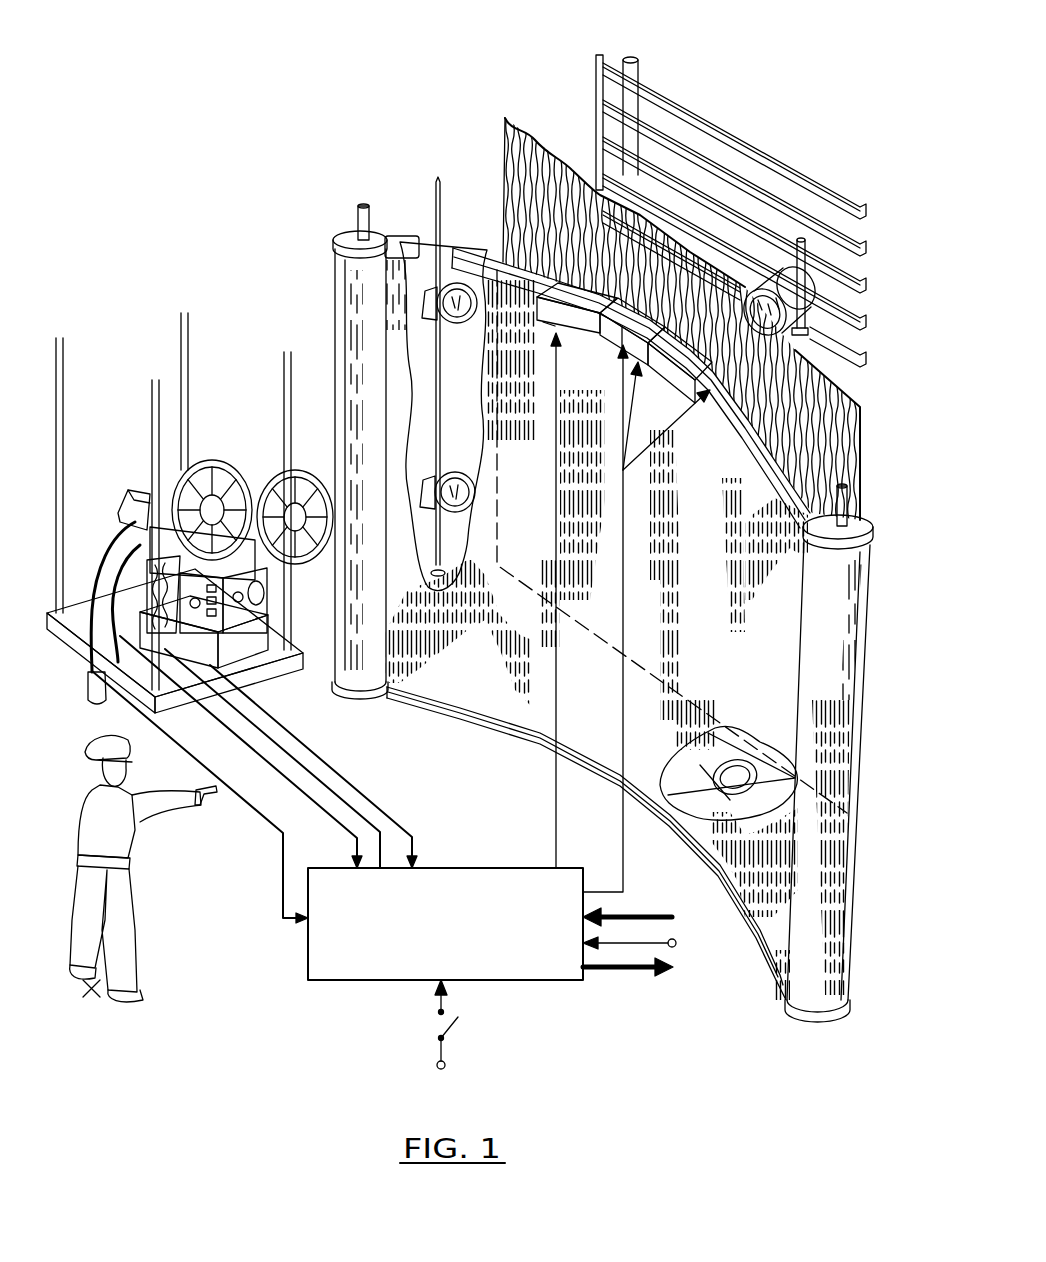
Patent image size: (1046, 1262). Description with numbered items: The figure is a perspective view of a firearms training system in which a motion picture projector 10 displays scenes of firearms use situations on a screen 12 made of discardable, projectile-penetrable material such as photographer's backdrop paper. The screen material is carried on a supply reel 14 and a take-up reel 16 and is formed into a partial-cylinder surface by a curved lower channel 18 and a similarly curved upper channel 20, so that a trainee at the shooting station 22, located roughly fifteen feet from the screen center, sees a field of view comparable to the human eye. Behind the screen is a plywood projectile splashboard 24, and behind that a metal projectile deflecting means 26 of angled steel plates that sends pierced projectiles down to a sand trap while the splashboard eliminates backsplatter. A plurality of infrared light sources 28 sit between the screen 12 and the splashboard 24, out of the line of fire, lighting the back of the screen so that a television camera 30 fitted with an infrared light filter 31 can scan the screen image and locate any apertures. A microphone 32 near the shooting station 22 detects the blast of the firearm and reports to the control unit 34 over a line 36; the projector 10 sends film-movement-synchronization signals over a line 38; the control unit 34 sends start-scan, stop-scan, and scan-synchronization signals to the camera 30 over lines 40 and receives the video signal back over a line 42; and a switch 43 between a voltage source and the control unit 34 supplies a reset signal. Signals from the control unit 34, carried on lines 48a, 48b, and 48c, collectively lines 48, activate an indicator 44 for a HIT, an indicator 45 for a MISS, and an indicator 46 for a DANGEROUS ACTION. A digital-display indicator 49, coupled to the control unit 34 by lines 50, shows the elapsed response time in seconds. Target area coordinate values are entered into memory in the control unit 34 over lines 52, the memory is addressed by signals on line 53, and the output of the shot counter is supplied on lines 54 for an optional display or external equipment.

The motion picture projector 10 is at (207, 559).
The screen 12 is at (832, 908).
The supply reel 14 is at (348, 228).
The take-up reel 16 is at (833, 558).
The curved lower channel 18 is at (515, 733).
The curved upper channel 20 is at (760, 433).
The trainee shooting station 22 is at (97, 997).
The projectile splashboard 24 is at (502, 170).
The projectile deflecting means 26 is at (580, 110).
The light sources 28 is at (460, 318).
The television camera 30 is at (128, 490).
The infrared light filter 31 is at (270, 462).
The microphone 32 is at (86, 694).
The control unit 34 is at (307, 973).
The line 36 is at (276, 838).
The line 38 is at (330, 765).
The lines 40 is at (333, 790).
The line 42 is at (250, 753).
The switch 43 is at (458, 1020).
The indicator 44 is at (613, 345).
The indicator 45 is at (625, 350).
The indicator 46 is at (655, 372).
The lines 48 is at (623, 598).
The line 48a is at (621, 441).
The line 48b is at (668, 433).
The line 48c is at (625, 470).
The digital-display indicator 49 is at (548, 324).
The lines 50 is at (558, 710).
The lines 52 is at (643, 912).
The line 53 is at (650, 945).
The lines 54 is at (630, 968).